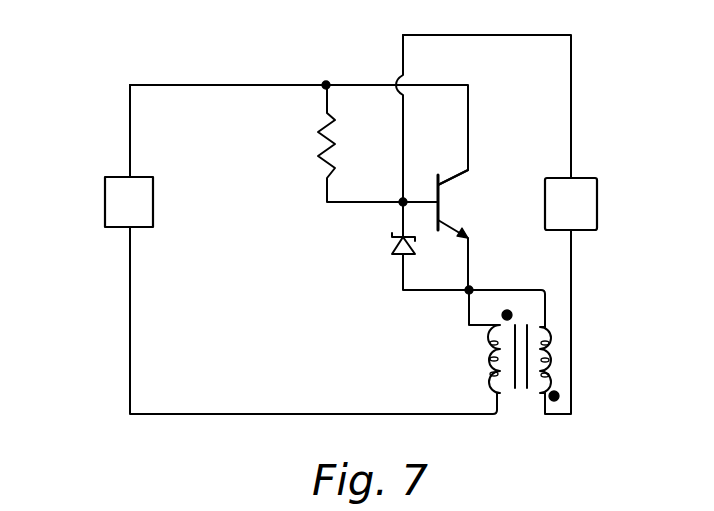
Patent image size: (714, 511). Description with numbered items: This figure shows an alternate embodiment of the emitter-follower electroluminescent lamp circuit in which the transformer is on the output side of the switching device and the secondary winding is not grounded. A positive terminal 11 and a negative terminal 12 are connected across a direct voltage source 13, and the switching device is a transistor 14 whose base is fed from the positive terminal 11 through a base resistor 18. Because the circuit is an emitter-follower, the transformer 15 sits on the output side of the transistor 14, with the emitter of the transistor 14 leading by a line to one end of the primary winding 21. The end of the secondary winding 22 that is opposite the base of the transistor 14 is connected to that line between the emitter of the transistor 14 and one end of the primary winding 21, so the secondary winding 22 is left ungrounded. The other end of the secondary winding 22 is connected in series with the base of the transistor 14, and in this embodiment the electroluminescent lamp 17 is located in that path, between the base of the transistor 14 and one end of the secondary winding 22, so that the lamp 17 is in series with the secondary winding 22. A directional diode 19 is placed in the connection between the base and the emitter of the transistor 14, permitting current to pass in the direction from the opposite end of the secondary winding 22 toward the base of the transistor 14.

The positive terminal 11 is at (127, 176).
The negative terminal 12 is at (125, 230).
The direct voltage source 13 is at (104, 203).
The transistor 14 is at (447, 203).
The transformer 15 is at (525, 345).
The electroluminescent lamp 17 is at (598, 207).
The base resistor 18 is at (318, 138).
The directional diode 19 is at (391, 250).
The primary winding 21 is at (490, 357).
The secondary winding 22 is at (548, 358).